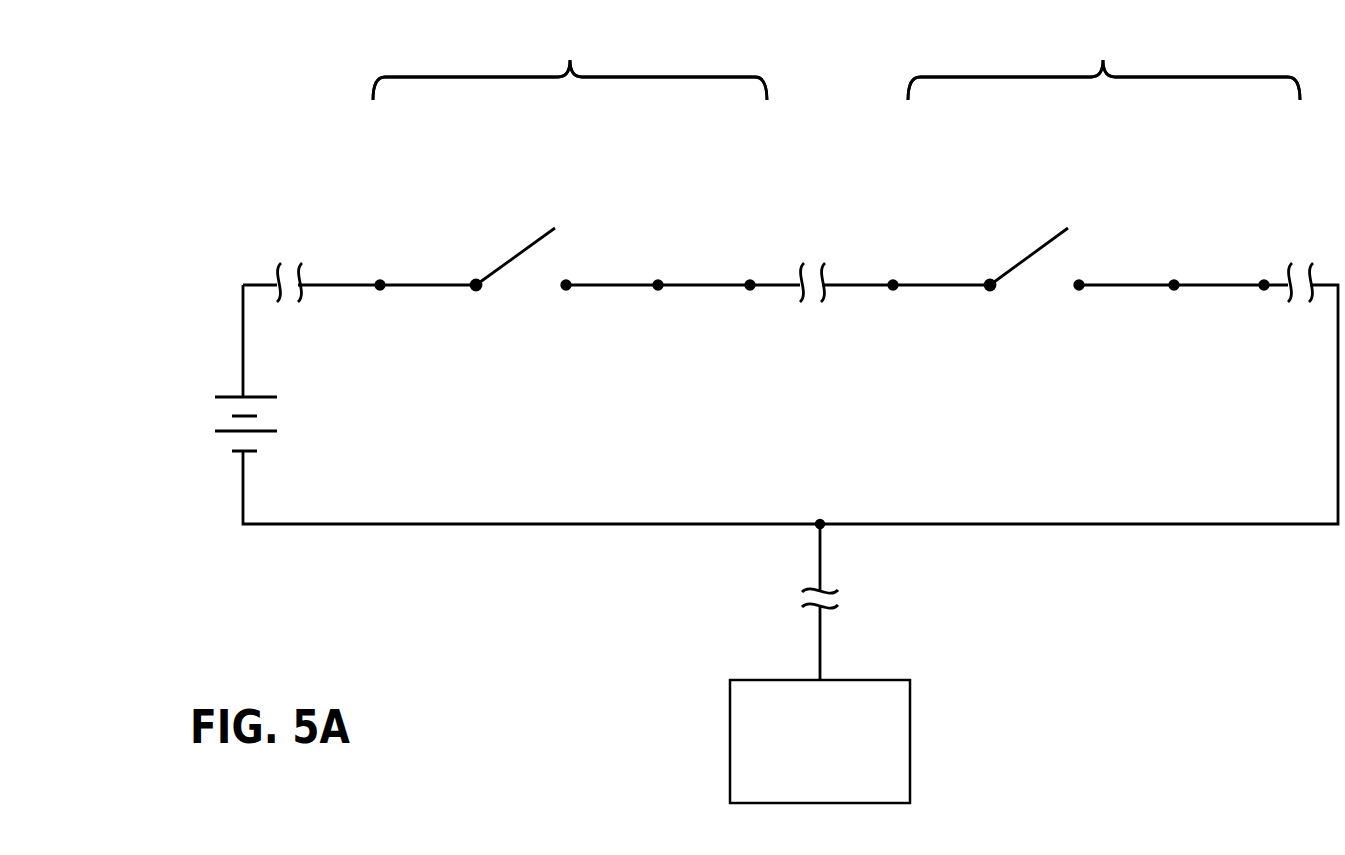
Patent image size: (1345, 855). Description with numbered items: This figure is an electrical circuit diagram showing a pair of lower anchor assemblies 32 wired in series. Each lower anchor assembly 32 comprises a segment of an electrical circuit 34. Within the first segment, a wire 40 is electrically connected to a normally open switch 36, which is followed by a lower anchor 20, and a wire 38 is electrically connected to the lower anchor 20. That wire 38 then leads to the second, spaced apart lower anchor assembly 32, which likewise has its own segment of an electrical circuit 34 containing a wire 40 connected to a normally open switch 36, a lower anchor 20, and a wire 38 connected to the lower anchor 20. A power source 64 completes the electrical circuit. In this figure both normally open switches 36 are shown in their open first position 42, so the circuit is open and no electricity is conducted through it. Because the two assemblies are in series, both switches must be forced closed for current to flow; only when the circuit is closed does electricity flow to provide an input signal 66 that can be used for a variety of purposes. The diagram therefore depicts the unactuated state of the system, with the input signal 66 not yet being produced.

The lower anchor 20 is at (597, 285).
The lower anchor assembly 32 is at (836, 65).
The segment of an electrical circuit 34 is at (836, 80).
The normally open switch 36 is at (518, 257).
The wire 38 is at (701, 285).
The wire 40 is at (412, 285).
The open first position 42 is at (516, 290).
The power source 64 is at (229, 396).
The input signal 66 is at (910, 733).